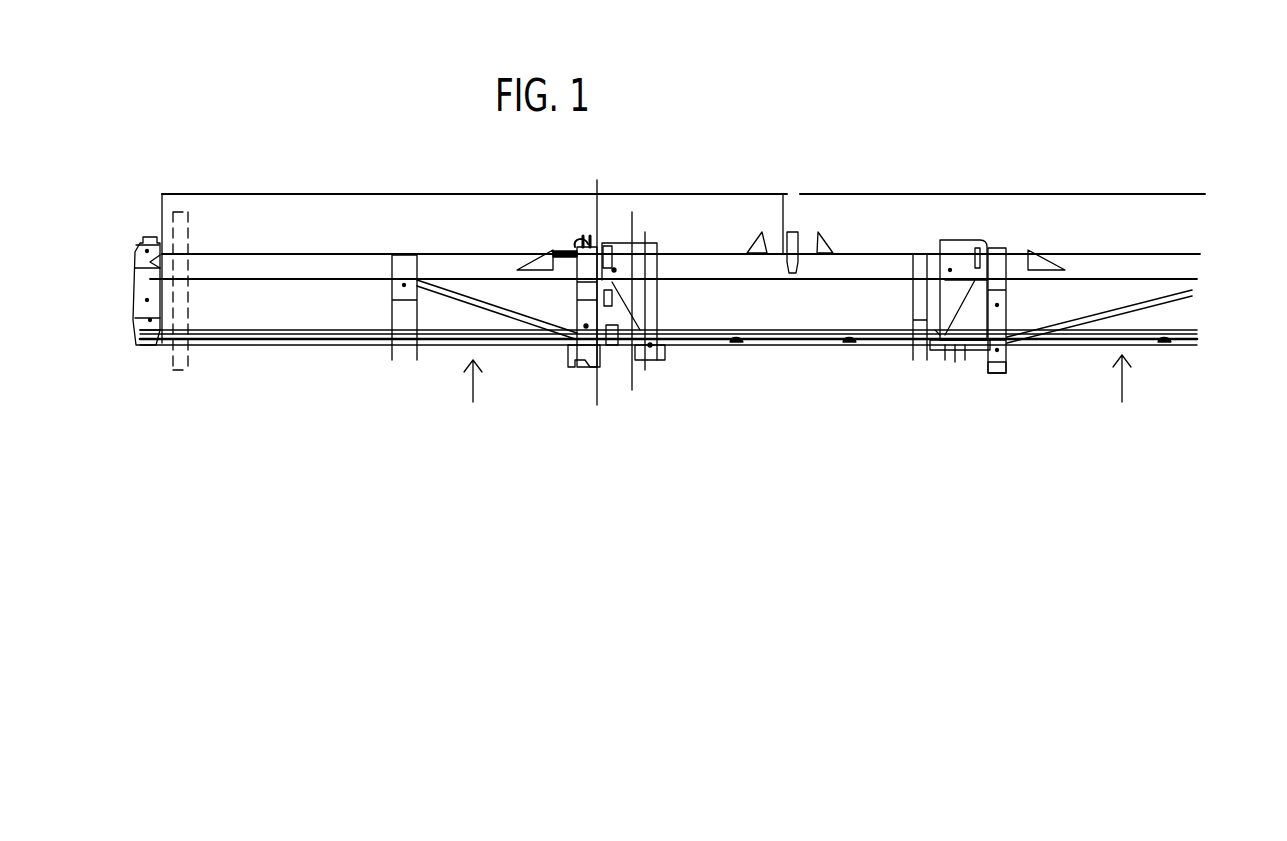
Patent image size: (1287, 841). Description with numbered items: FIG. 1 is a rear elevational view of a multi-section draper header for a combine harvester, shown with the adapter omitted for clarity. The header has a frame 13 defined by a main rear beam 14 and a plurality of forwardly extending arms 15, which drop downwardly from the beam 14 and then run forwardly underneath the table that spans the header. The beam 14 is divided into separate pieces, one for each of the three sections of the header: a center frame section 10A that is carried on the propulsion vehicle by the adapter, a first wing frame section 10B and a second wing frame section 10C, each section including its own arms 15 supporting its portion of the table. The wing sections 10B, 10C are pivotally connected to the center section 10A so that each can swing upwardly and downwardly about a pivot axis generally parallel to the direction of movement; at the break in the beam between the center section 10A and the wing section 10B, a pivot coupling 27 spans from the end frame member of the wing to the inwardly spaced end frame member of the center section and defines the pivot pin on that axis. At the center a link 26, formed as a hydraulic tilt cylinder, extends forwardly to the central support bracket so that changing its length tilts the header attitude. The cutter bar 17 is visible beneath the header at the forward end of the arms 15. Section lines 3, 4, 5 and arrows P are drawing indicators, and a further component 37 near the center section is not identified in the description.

The center frame portion or section 10A is at (752, 176).
The first wing frame portion or section 10B is at (408, 118).
The second wing frame portion or section 10C is at (1027, 178).
The frame 13 is at (837, 226).
The main rear beam 14 is at (291, 262).
The forwardly extending arms 15 is at (403, 308).
The cutter bar 17 is at (991, 246).
The link 26 is at (803, 262).
The pivot coupling 27 is at (962, 350).
The gusset arm 37 is at (536, 195).
The section line 3 is at (625, 405).
The section line 4 is at (655, 390).
The section line 5 is at (670, 370).
The direction of travel P is at (797, 399).